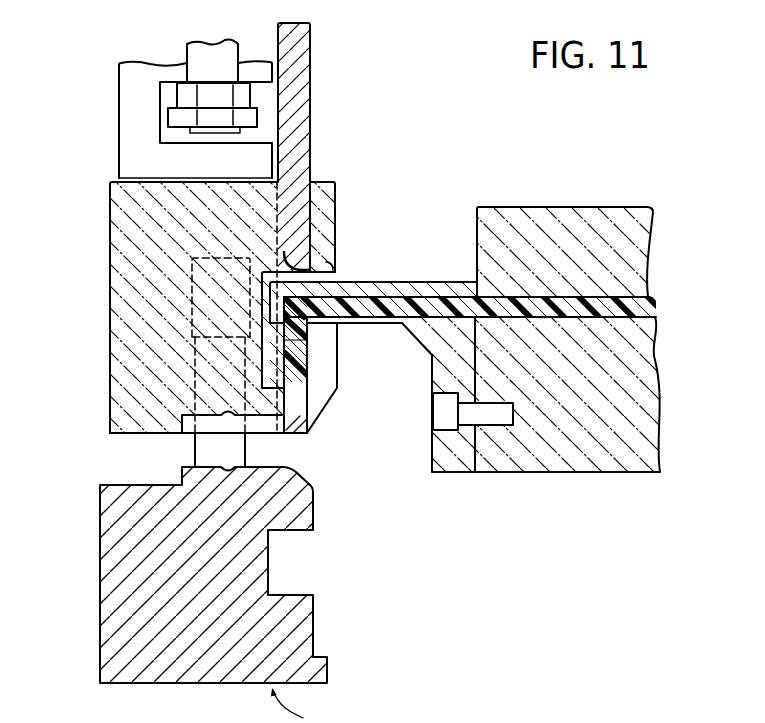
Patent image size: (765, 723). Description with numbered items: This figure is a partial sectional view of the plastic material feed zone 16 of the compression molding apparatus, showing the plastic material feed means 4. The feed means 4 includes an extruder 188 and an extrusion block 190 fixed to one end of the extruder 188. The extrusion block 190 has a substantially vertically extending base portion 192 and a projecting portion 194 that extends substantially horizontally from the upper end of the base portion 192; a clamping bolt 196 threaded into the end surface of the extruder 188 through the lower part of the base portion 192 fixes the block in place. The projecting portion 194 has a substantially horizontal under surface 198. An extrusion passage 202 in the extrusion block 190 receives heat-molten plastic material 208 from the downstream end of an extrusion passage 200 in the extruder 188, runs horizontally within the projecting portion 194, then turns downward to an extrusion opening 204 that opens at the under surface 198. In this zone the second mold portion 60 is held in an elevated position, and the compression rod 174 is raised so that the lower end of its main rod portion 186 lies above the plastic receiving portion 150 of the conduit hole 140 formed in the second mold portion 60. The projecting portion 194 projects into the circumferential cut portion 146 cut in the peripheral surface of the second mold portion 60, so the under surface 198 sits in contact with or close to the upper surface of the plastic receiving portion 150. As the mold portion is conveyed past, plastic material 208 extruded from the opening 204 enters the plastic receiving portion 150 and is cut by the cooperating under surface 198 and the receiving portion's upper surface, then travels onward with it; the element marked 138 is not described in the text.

The plastic material feed means 4 is at (548, 488).
The plastic material feed zone 16 is at (448, 148).
The second mold portion 60 is at (342, 208).
The hidden bolt and key piece 138 is at (280, 437).
The conduit hole 140 is at (300, 403).
The circumferential cut portion 146 is at (331, 276).
The plastic receiving portion 150 is at (292, 341).
The compression rod 174 is at (317, 113).
The main rod portion 186 is at (305, 154).
The extruder 188 is at (562, 203).
The extrusion block 190 is at (385, 282).
The base portion 192 is at (432, 366).
The projecting portion 194 is at (372, 329).
The clamping bolt 196 is at (431, 421).
The under surface 198 is at (322, 330).
The extrusion passage 200 is at (608, 297).
The extrusion passage 202 is at (426, 302).
The extrusion opening 204 is at (290, 335).
The plastic material 208 is at (296, 376).